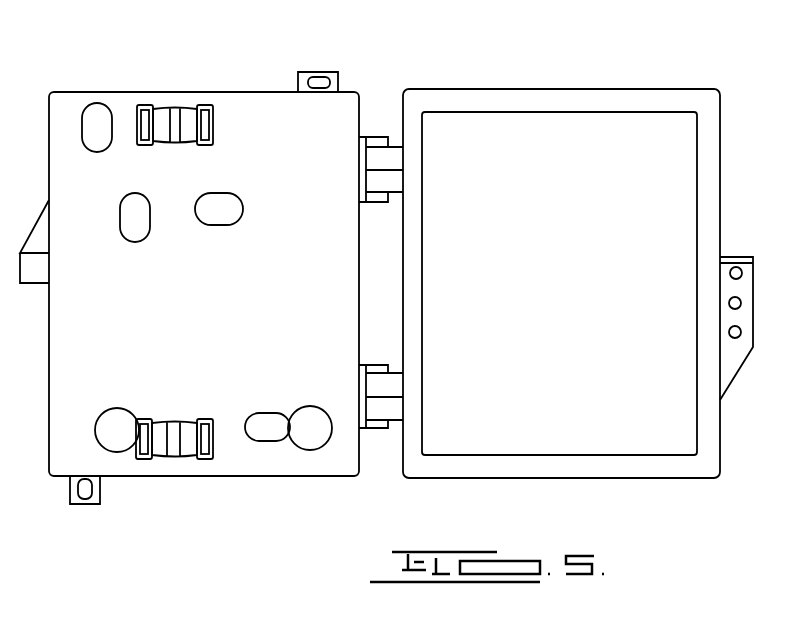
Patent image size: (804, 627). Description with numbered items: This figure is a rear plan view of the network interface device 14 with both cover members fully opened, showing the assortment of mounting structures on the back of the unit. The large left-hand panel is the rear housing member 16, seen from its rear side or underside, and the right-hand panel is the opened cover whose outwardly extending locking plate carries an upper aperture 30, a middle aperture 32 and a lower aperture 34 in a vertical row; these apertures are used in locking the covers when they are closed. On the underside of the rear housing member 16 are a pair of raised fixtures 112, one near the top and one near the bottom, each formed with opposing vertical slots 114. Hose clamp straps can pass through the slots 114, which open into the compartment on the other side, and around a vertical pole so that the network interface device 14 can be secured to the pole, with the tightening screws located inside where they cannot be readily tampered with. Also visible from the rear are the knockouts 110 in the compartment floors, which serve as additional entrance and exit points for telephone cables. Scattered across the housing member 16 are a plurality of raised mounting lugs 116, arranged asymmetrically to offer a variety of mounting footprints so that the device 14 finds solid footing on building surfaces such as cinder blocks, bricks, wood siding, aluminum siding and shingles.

The network interface device 14 is at (442, 64).
The rear housing member 16 is at (254, 100).
The upper aperture 30 is at (729, 273).
The middle aperture 32 is at (728, 303).
The lower aperture 34 is at (728, 332).
The knockouts 110 is at (110, 413).
The raised fixtures 112 is at (167, 143).
The vertical slots 114 is at (203, 112).
The raised mounting lugs 116 is at (97, 113).